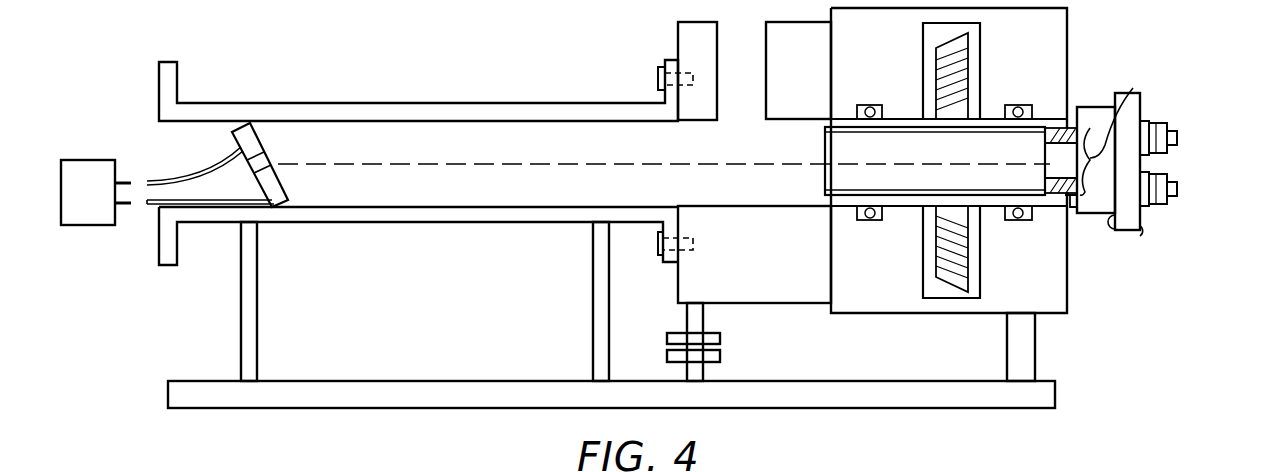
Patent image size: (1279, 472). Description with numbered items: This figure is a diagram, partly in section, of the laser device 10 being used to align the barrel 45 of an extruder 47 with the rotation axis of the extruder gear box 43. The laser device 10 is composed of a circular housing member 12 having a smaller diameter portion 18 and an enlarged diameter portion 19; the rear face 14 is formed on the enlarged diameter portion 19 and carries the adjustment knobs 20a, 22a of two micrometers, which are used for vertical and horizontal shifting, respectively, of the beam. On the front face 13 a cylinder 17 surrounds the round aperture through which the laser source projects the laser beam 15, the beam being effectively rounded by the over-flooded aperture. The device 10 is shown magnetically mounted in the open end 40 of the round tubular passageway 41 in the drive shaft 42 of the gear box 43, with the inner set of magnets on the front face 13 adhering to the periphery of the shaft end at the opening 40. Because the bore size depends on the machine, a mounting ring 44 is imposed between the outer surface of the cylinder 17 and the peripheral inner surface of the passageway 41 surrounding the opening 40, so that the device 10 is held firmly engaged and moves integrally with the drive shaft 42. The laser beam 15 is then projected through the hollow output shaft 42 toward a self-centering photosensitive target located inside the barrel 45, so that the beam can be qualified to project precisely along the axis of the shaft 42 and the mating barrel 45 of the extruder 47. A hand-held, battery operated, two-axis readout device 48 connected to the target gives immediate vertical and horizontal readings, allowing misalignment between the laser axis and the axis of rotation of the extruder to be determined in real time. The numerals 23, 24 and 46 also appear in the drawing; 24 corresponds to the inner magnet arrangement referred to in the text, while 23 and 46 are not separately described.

The laser device 10 is at (1162, 90).
The housing member 12 is at (1142, 232).
The front face 13 is at (1068, 197).
The rear face 14 is at (1138, 162).
The laser beam 15 is at (703, 163).
The cylinder 17 is at (1057, 163).
The smaller diameter portion 18 is at (1095, 203).
The enlarged diameter portion 19 is at (1132, 217).
The micrometer adjustment knob 20a is at (1170, 129).
The micrometer adjustment knob 22a is at (1170, 200).
The mounting plate 23 is at (1107, 105).
The connector block 24 is at (1072, 128).
The open end 40 is at (1124, 109).
The tubular passageway 41 is at (850, 130).
The drive shaft 42 is at (992, 119).
The extruder gear box 43 is at (882, 274).
The mounting ring 44 is at (1060, 127).
The barrel 45 is at (432, 103).
The reflector 46 is at (252, 145).
The extruder 47 is at (676, 37).
The readout device 48 is at (102, 203).